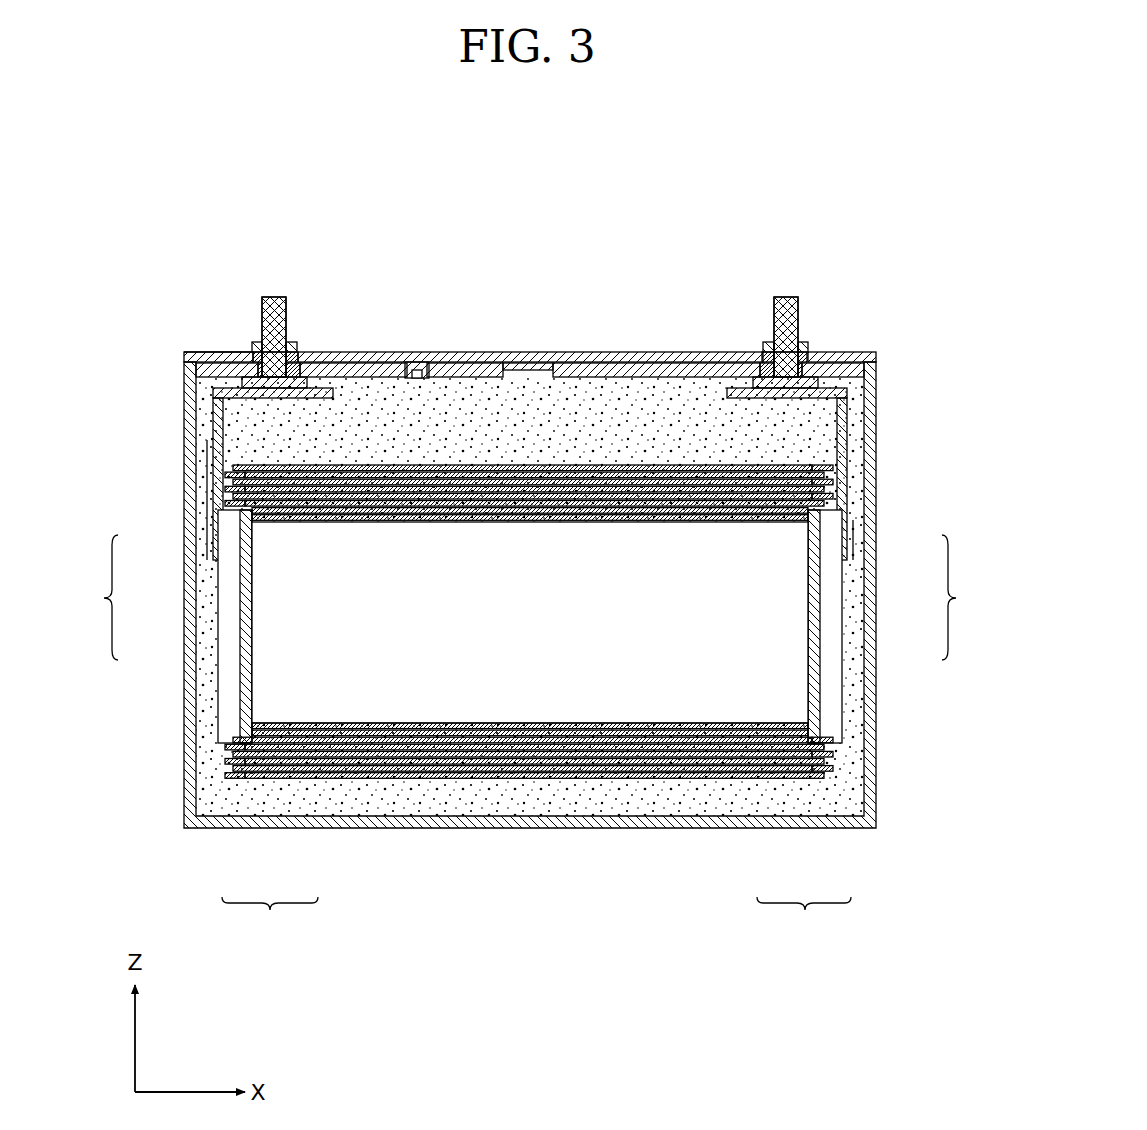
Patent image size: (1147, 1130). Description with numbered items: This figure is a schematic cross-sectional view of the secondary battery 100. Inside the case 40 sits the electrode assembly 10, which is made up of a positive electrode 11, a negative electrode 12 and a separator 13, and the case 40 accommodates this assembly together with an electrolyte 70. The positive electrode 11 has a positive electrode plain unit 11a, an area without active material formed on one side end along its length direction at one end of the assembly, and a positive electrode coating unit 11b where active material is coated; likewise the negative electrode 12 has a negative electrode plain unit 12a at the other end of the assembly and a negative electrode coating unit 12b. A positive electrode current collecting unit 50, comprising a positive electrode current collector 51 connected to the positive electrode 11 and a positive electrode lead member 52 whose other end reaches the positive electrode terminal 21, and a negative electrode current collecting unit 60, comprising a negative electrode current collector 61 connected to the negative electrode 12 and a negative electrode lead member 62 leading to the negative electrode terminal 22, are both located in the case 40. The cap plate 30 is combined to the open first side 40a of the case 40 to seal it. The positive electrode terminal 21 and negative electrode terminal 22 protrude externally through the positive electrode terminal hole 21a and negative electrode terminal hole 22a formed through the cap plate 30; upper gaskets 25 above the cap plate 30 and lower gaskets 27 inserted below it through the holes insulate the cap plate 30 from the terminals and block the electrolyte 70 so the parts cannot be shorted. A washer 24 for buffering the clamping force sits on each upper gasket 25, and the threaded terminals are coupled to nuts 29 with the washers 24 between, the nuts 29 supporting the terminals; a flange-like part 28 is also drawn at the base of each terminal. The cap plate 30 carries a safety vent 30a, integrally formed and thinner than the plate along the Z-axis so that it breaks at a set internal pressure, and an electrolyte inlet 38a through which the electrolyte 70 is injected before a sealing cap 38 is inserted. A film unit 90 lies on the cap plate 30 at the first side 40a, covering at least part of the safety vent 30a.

The secondary battery 100 is at (517, 198).
The electrode assembly 10 is at (537, 702).
The positive electrode 11 is at (511, 706).
The positive electrode plain unit 11a is at (227, 796).
The positive electrode coating unit 11b is at (306, 790).
The negative electrode 12 is at (554, 702).
The negative electrode plain unit 12a is at (836, 796).
The negative electrode coating unit 12b is at (770, 790).
The separator 13 is at (490, 752).
The positive electrode terminal 21 is at (273, 297).
The positive electrode terminal hole 21a is at (288, 352).
The negative electrode terminal 22 is at (785, 297).
The negative electrode terminal hole 22a is at (772, 352).
The washer 24 is at (252, 352).
The upper gasket 25 is at (254, 355).
The lower gasket 27 is at (255, 391).
The terminal flange plate 28 is at (302, 380).
The nut 29 is at (258, 350).
The cap plate 30 is at (585, 362).
The safety vent 30a is at (530, 362).
The sealing cap 38 is at (410, 362).
The electrolyte inlet 38a is at (420, 370).
The case 40 is at (877, 701).
The first side 40a is at (180, 352).
The positive electrode current collecting unit 50 is at (165, 570).
The positive electrode current collector 51 is at (216, 661).
The positive electrode lead member 52 is at (212, 500).
The negative electrode current collecting unit 60 is at (895, 570).
The negative electrode current collector 61 is at (846, 661).
The negative electrode lead member 62 is at (853, 490).
The electrolyte 70 is at (661, 410).
The film unit 90 is at (625, 352).